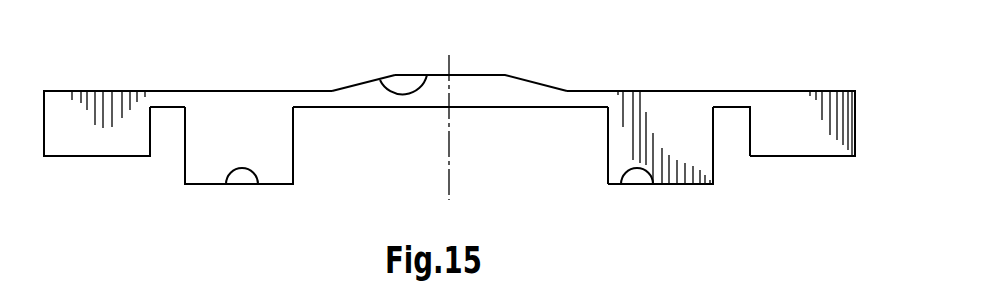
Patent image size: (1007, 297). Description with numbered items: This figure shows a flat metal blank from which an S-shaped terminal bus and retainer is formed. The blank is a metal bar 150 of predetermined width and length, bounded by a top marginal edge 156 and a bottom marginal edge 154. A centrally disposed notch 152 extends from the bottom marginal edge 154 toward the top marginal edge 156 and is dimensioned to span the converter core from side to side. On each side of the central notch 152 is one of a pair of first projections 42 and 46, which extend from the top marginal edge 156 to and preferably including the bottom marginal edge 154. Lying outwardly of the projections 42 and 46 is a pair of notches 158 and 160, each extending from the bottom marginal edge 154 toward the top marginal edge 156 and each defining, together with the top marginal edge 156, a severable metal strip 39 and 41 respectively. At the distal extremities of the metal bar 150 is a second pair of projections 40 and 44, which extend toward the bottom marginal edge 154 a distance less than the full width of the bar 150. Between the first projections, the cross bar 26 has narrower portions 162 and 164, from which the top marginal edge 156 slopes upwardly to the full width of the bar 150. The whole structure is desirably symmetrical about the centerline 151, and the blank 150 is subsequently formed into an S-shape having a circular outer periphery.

The cross bar 26 is at (498, 97).
The severable metal strip 39 is at (165, 99).
The projection 40 is at (87, 118).
The severable metal strip 41 is at (727, 97).
The first projection 42 is at (227, 110).
The projection 44 is at (775, 123).
The first projection 46 is at (690, 123).
The metal bar 150 is at (648, 92).
The centerline 151 is at (452, 68).
The centrally disposed notch 152 is at (490, 150).
The bottom marginal edge 154 is at (232, 184).
The top marginal edge 156 is at (387, 80).
The notch 158 is at (173, 142).
The notch 160 is at (740, 147).
The narrower portion 162 is at (307, 100).
The narrower portion 164 is at (583, 100).